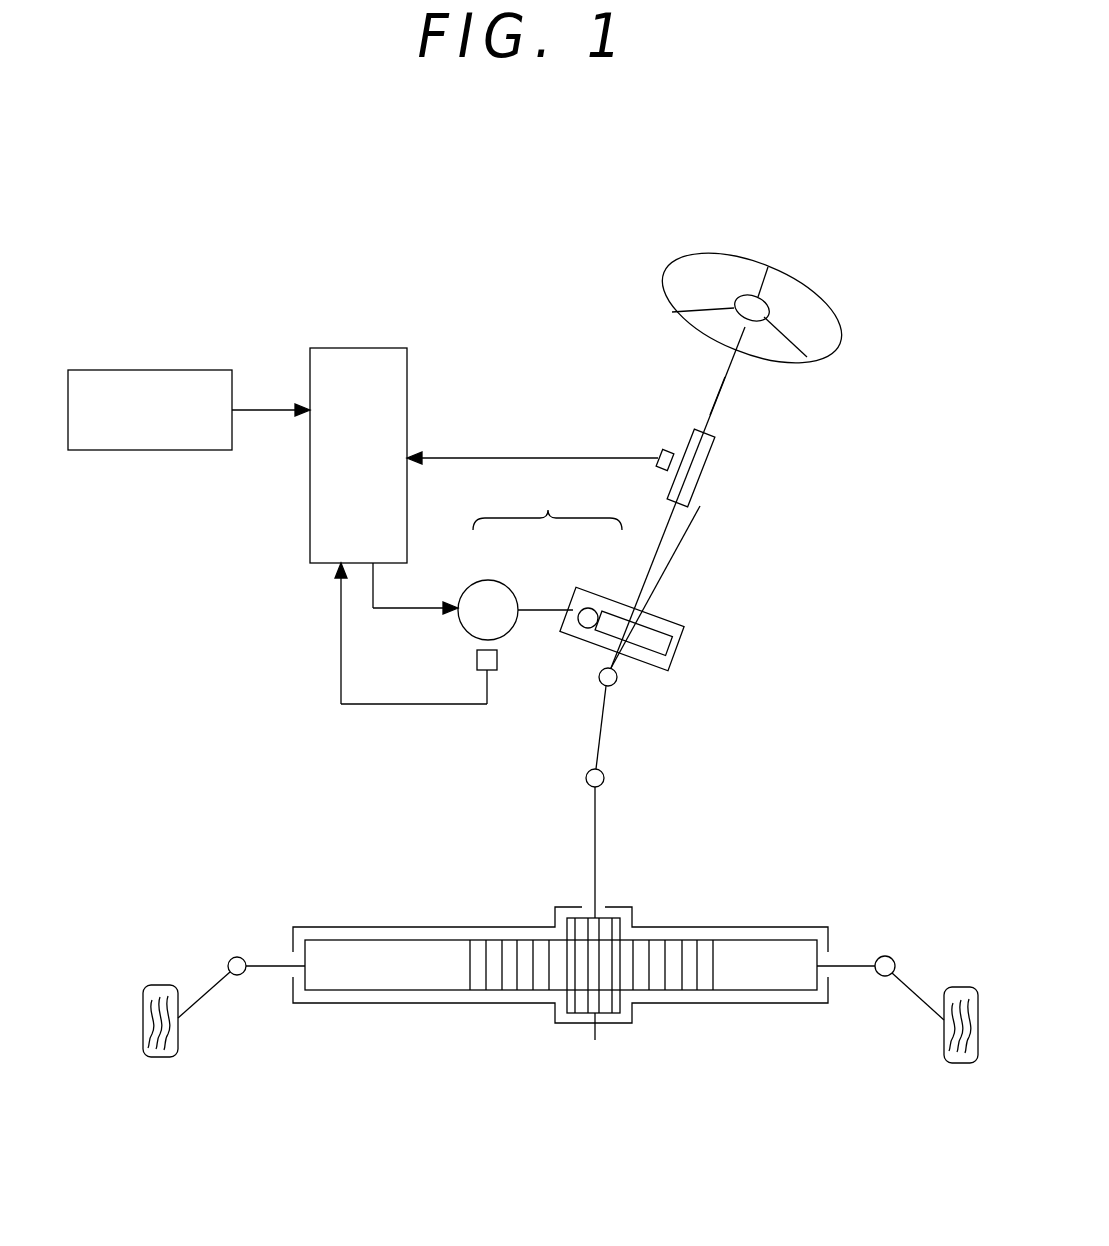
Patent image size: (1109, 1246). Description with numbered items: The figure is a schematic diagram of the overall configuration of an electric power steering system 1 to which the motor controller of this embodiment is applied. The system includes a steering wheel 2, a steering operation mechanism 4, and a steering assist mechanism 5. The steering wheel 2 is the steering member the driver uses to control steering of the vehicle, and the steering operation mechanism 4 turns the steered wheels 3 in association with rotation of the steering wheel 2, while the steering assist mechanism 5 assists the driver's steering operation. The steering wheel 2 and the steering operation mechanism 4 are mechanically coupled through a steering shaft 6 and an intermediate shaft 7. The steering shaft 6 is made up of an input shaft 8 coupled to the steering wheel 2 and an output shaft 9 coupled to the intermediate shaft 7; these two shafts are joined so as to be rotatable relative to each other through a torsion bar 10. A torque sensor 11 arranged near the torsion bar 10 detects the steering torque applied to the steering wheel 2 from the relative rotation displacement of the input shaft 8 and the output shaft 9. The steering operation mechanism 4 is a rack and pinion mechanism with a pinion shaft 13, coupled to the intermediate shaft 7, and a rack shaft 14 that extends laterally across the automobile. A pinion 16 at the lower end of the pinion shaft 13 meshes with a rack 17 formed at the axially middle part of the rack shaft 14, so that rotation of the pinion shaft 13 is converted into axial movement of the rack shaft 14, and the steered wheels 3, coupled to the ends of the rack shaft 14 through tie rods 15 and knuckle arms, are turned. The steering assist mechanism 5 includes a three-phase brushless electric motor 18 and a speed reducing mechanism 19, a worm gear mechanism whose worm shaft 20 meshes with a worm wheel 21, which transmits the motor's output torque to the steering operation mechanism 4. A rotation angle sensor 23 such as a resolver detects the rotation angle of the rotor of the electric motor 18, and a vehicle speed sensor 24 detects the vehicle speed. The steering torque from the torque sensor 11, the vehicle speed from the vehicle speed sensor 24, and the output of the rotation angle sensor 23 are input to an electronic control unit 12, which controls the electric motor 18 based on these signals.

The electric power steering system 1 is at (859, 268).
The steering wheel 2 is at (843, 335).
The steered wheels 3 is at (165, 985).
The steering operation mechanism 4 is at (663, 938).
The steering assist mechanism 5 is at (547, 503).
The steering shaft 6 is at (729, 380).
The intermediate shaft 7 is at (601, 742).
The input shaft 8 is at (712, 414).
The output shaft 9 is at (656, 556).
The torsion bar 10 is at (692, 472).
The torque sensor 11 is at (660, 450).
The electronic control unit 12 is at (362, 348).
The pinion shaft 13 is at (596, 838).
The rack shaft 14 is at (775, 996).
The tie rods 15 is at (212, 992).
The pinion 16 is at (592, 1006).
The rack 17 is at (495, 982).
The electric motor 18 is at (490, 580).
The speed reducing mechanism 19 is at (596, 590).
The worm shaft 20 is at (580, 630).
The worm wheel 21 is at (652, 640).
The rotation angle sensor 23 is at (477, 660).
The vehicle speed sensor 24 is at (148, 370).